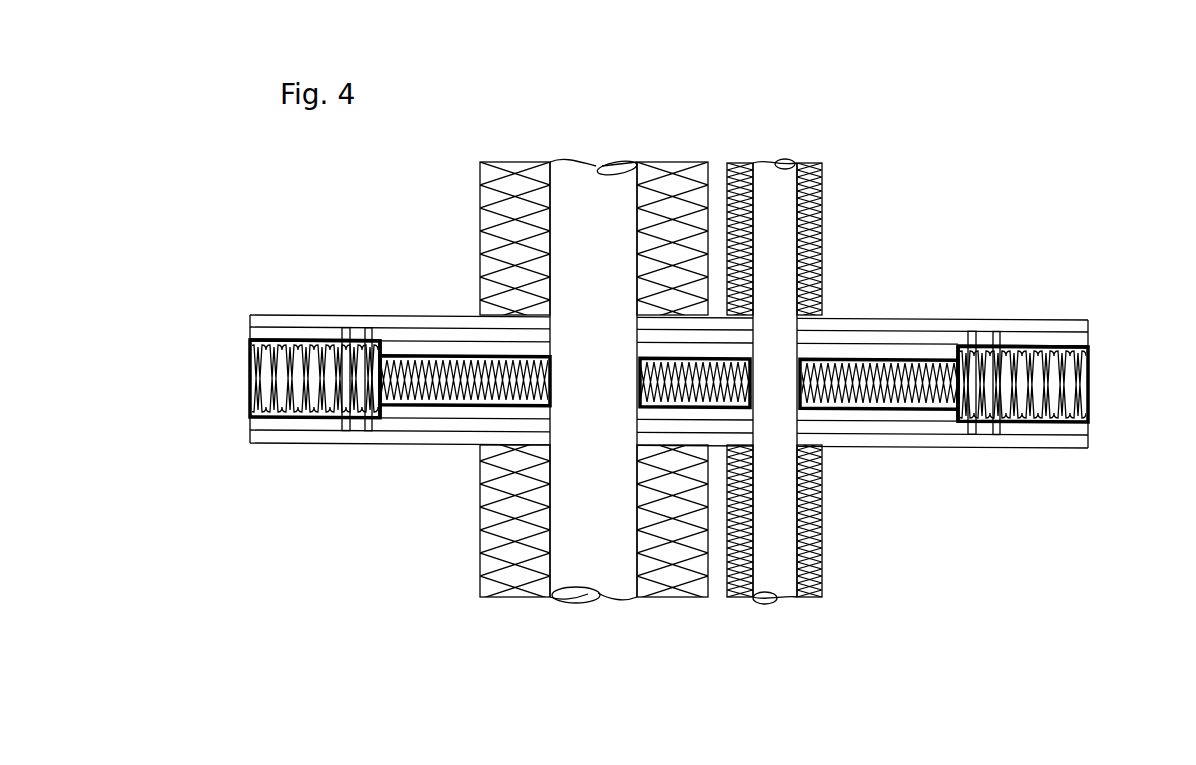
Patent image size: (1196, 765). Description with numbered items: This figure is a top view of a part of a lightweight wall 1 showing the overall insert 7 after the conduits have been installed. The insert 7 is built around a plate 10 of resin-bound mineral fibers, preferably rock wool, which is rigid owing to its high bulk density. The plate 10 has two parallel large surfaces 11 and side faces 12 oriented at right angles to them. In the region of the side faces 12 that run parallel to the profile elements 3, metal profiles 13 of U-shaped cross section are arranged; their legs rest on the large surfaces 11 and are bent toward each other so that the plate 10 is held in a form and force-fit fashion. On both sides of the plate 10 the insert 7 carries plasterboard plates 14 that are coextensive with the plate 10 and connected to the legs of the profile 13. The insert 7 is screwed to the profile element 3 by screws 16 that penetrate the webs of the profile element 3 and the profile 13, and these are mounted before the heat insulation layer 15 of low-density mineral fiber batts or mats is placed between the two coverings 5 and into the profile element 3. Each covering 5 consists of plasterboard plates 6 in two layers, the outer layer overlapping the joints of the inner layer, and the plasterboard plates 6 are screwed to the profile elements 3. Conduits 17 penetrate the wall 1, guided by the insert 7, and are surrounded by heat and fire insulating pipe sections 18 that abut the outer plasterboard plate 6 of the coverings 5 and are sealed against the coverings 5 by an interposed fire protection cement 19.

The lightweight wall 1 is at (1124, 304).
The profile element 3 is at (382, 412).
The covering 5 is at (975, 304).
The plasterboard plate 6 is at (930, 330).
The insert 7 is at (882, 358).
The plate 10 is at (735, 395).
The large surface 11 is at (460, 350).
The side face 12 is at (345, 362).
The profile 13 is at (540, 368).
The plasterboard plate 14 is at (410, 347).
The heat insulation layer 15 is at (268, 399).
The screw 16 is at (358, 378).
The conduit 17 is at (616, 566).
The pipe section 18 is at (497, 572).
The fire protection cement 19 is at (637, 316).